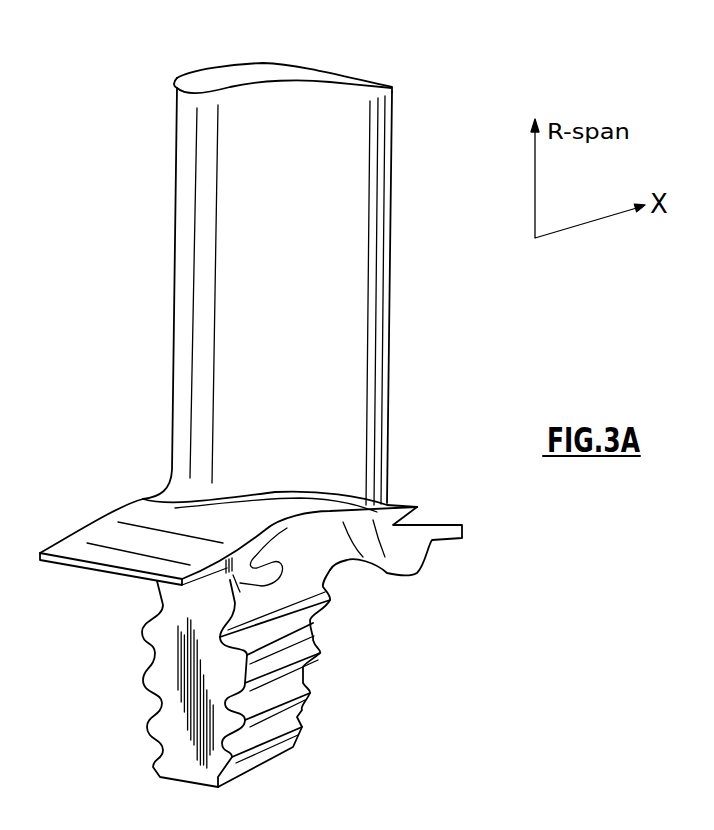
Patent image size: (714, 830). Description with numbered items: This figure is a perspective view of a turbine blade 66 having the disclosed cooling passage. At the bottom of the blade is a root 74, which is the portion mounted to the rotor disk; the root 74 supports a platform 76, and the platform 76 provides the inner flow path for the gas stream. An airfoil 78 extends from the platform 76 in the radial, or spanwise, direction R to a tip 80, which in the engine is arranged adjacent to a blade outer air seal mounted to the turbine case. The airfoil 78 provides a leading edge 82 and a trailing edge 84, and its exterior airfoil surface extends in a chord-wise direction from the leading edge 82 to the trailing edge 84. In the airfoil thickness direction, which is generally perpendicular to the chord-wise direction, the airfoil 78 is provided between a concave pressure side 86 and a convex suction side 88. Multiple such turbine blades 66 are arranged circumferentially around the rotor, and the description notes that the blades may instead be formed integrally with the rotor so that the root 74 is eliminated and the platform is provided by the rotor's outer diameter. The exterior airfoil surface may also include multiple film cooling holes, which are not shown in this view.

The turbine blade 66 is at (138, 247).
The root 74 is at (180, 685).
The platform 76 is at (290, 502).
The airfoil 78 is at (338, 385).
The tip 80 is at (193, 74).
The leading edge 82 is at (176, 246).
The trailing edge 84 is at (392, 235).
The pressure side 86 is at (287, 296).
The suction side 88 is at (316, 60).